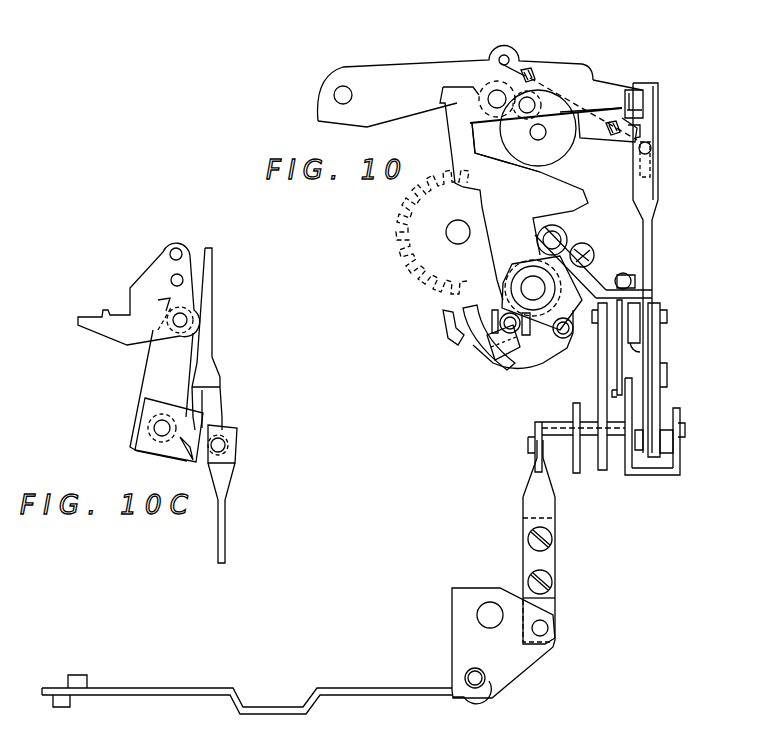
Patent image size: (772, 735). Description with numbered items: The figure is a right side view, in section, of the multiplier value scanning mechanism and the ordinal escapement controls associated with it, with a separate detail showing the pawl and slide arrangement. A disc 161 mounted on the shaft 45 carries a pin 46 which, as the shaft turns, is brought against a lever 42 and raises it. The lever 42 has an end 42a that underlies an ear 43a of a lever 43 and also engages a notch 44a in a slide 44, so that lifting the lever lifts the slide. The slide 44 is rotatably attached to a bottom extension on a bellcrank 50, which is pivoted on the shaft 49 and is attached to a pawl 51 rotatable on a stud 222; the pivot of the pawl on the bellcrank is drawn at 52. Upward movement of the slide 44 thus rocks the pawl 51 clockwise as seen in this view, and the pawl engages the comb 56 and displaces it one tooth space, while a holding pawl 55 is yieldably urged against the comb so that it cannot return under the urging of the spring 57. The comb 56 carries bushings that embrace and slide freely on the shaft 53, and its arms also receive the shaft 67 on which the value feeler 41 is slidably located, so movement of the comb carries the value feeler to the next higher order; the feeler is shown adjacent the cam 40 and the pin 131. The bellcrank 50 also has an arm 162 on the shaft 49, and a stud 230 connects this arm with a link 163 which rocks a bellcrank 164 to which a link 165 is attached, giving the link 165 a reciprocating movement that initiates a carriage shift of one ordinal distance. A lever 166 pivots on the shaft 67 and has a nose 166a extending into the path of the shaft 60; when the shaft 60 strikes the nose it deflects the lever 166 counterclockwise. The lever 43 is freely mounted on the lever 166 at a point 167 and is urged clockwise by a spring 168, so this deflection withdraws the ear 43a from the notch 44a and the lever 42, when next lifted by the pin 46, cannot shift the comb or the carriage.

In FIG. 10, the lever 42 is at (400, 72).
In FIG. 10, the end of lever 42 42a is at (650, 135).
In FIG. 10, the lever 43 is at (593, 93).
In FIG. 10, the ear of lever 43 43a is at (625, 90).
In FIG. 10, the slide 44 is at (657, 84).
In FIG. 10C, the slide 44 is at (212, 403).
In FIG. 10, the notch 44a is at (641, 125).
In FIG. 10, the shaft 45 is at (545, 136).
In FIG. 10, the pin 46 is at (510, 128).
In FIG. 10, the shaft 49 is at (572, 427).
In FIG. 10C, the shaft 49 is at (160, 427).
In FIG. 10, the bellcrank 50 is at (660, 397).
In FIG. 10C, the bellcrank 50 is at (155, 380).
In FIG. 10, the pawl 51 is at (640, 350).
In FIG. 10C, the pawl 51 is at (138, 285).
In FIG. 10C, the pivot 52 is at (185, 318).
In FIG. 10, the shaft 53 is at (558, 236).
In FIG. 10, the holding pawl 55 is at (620, 360).
In FIG. 10, the comb 56 is at (603, 292).
In FIG. 10, the spring 57 is at (589, 256).
In FIG. 10, the shaft 60 is at (495, 355).
In FIG. 10, the shaft 67 is at (523, 287).
In FIG. 10, the cam 40 is at (510, 358).
In FIG. 10, the value feeler 41 is at (463, 293).
In FIG. 10, the pin 131 is at (562, 338).
In FIG. 10, the disc 161 is at (557, 150).
In FIG. 10, the arm 162 is at (579, 470).
In FIG. 10C, the arm 162 is at (195, 418).
In FIG. 10, the link 163 is at (547, 560).
In FIG. 10C, the link 163 is at (225, 537).
In FIG. 10, the bellcrank 164 is at (460, 651).
In FIG. 10, the link 165 is at (353, 668).
In FIG. 10, the lever 166 is at (450, 125).
In FIG. 10, the nose 166a is at (530, 362).
In FIG. 10, the point 167 is at (494, 91).
In FIG. 10, the spring 168 is at (525, 73).
In FIG. 10C, the stud 222 is at (178, 250).
In FIG. 10, the stud 230 is at (558, 443).